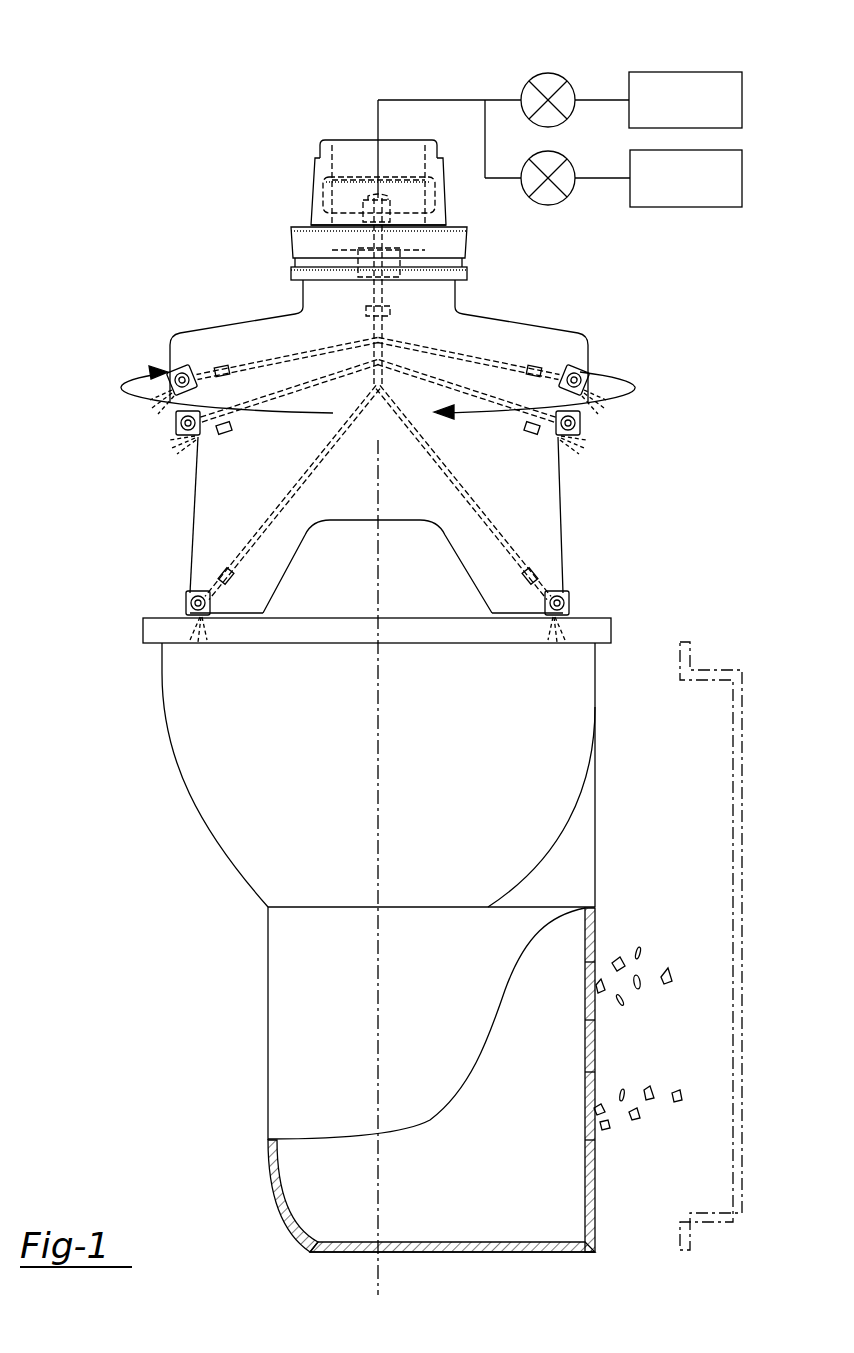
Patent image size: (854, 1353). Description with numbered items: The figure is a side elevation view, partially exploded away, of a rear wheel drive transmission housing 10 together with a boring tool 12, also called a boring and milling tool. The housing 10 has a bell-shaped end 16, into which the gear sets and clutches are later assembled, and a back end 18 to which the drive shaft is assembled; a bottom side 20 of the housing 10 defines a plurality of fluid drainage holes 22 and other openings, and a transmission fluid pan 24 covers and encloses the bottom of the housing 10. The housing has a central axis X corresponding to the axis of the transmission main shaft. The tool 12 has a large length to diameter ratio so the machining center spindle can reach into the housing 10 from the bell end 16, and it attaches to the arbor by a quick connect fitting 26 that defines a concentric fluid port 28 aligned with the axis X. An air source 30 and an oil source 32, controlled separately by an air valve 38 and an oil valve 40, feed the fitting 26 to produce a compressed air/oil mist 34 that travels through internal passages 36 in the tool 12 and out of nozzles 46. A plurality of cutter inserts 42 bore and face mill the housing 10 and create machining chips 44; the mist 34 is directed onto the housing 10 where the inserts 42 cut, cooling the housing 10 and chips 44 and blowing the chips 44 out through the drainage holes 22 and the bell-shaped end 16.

The rear wheel drive transmission housing 10 is at (228, 936).
The boring tool 12 is at (228, 512).
The bell-shaped end 16 is at (362, 746).
The back end 18 is at (328, 1253).
The bottom side 20 is at (597, 1169).
The fluid drainage holes 22 is at (593, 963).
The transmission fluid pan 24 is at (720, 668).
The quick connect fitting 26 is at (355, 150).
The concentric fluid port 28 is at (377, 217).
The air source 30 is at (742, 100).
The oil source 32 is at (742, 178).
The compressed air/oil mist 34 is at (600, 407).
The internal passages 36 is at (320, 455).
The air valve 38 is at (550, 73).
The oil valve 40 is at (548, 205).
The cutter inserts 42 is at (192, 368).
The machining chips 44 is at (641, 990).
The nozzles 46 is at (218, 437).
The central axis X is at (377, 965).